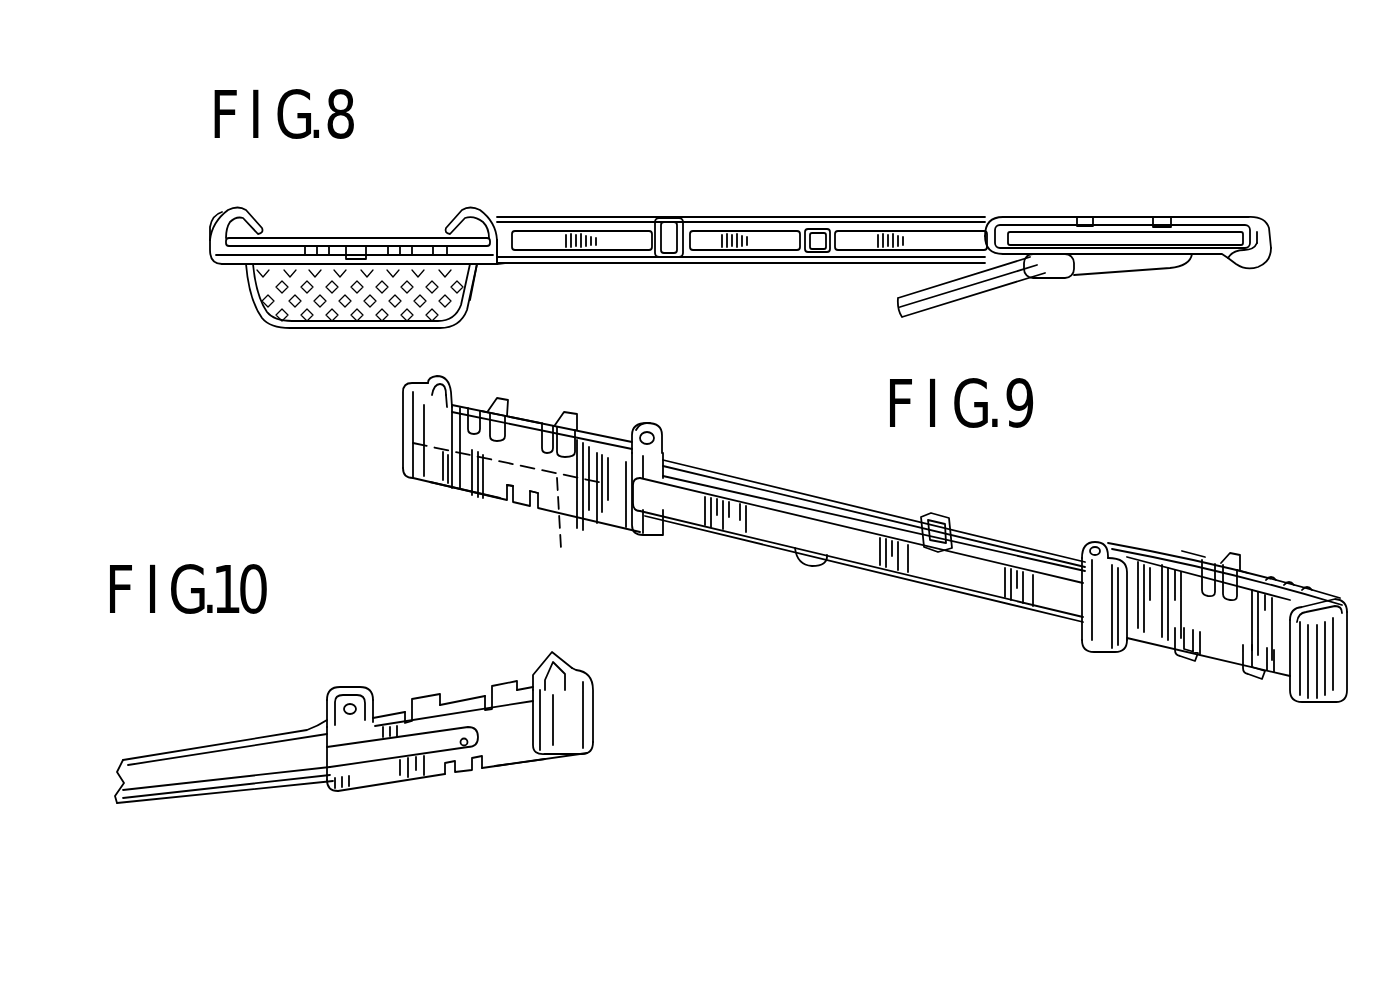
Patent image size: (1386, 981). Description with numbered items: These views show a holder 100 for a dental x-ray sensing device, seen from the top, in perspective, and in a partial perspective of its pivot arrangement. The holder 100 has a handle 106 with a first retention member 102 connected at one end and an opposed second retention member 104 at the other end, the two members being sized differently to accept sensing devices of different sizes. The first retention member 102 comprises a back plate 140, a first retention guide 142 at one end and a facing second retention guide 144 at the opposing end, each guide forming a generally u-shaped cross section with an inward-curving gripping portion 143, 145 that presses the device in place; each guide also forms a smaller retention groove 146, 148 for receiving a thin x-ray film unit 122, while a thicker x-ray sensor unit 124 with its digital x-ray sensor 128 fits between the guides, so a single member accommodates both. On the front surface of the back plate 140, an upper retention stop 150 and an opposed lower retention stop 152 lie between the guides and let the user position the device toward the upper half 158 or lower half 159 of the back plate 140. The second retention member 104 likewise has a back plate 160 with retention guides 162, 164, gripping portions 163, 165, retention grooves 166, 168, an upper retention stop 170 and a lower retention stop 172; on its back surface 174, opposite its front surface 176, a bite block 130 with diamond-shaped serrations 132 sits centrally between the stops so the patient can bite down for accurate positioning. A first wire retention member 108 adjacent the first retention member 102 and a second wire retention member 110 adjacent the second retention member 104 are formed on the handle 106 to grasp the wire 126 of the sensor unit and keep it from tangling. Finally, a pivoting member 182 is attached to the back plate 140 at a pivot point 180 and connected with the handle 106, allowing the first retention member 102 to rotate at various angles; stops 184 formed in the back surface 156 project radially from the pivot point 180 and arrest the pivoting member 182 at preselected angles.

In FIG. 8, the holder 100 is at (762, 186).
In FIG. 9, the holder 100 is at (795, 452).
In FIG. 10, the holder 100 is at (254, 814).
In FIG. 8, the first retention member 102 is at (1251, 188).
In FIG. 9, the first retention member 102 is at (415, 503).
In FIG. 10, the first retention member 102 is at (513, 784).
In FIG. 8, the second retention member 104 is at (468, 334).
In FIG. 9, the second retention member 104 is at (1207, 737).
In FIG. 8, the handle 106 is at (722, 240).
In FIG. 9, the handle 106 is at (883, 510).
In FIG. 10, the handle 106 is at (215, 758).
In FIG. 8, the first wire retention member 108 is at (814, 252).
In FIG. 9, the first wire retention member 108 is at (803, 565).
In FIG. 8, the second wire retention member 110 is at (665, 228).
In FIG. 9, the second wire retention member 110 is at (945, 520).
In FIG. 8, the x-ray film unit 122 is at (424, 246).
In FIG. 8, the x-ray sensor unit 124 is at (1210, 242).
In FIG. 8, the wire 126 is at (967, 295).
In FIG. 8, the digital x-ray sensor 128 is at (1157, 260).
In FIG. 8, the bite block 130 is at (382, 328).
In FIG. 9, the bite block 130 is at (1210, 560).
In FIG. 8, the serrations 132 is at (382, 312).
In FIG. 8, the back plate 140 is at (1027, 220).
In FIG. 9, the back plate 140 is at (480, 408).
In FIG. 10, the back plate 140 is at (360, 793).
In FIG. 8, the first retention guide 142 is at (1248, 273).
In FIG. 9, the first retention guide 142 is at (432, 378).
In FIG. 10, the first retention guide 142 is at (553, 652).
In FIG. 8, the gripping portion 143 is at (1228, 267).
In FIG. 9, the gripping portion 143 is at (453, 404).
In FIG. 8, the second retention guide 144 is at (1000, 257).
In FIG. 9, the second retention guide 144 is at (652, 428).
In FIG. 10, the second retention guide 144 is at (348, 686).
In FIG. 8, the gripping portion 145 is at (1023, 262).
In FIG. 9, the gripping portion 145 is at (646, 430).
In FIG. 8, the retention groove 146 is at (1268, 230).
In FIG. 9, the retention groove 146 is at (405, 390).
In FIG. 10, the retention groove 146 is at (583, 670).
In FIG. 8, the retention groove 148 is at (992, 238).
In FIG. 9, the retention groove 148 is at (664, 442).
In FIG. 10, the retention groove 148 is at (330, 703).
In FIG. 8, the upper retention stop 150 is at (1082, 224).
In FIG. 9, the upper retention stop 150 is at (500, 403).
In FIG. 10, the upper retention stop 150 is at (420, 697).
In FIG. 9, the lower retention stop 152 is at (530, 512).
In FIG. 10, the lower retention stop 152 is at (458, 777).
In FIG. 8, the back surface 156 is at (1218, 212).
In FIG. 9, the back surface 156 is at (447, 483).
In FIG. 10, the back surface 156 is at (517, 760).
In FIG. 9, the upper half 158 is at (605, 458).
In FIG. 9, the lower half 159 is at (601, 523).
In FIG. 8, the back plate 160 is at (282, 258).
In FIG. 9, the back plate 160 is at (1146, 548).
In FIG. 8, the retention guide 162 is at (497, 223).
In FIG. 9, the retention guide 162 is at (1082, 632).
In FIG. 8, the gripping portion 163 is at (452, 226).
In FIG. 9, the gripping portion 163 is at (1110, 640).
In FIG. 8, the retention guide 164 is at (213, 232).
In FIG. 9, the retention guide 164 is at (1345, 670).
In FIG. 8, the gripping portion 165 is at (258, 230).
In FIG. 9, the gripping portion 165 is at (1293, 680).
In FIG. 8, the retention groove 166 is at (503, 256).
In FIG. 9, the retention groove 166 is at (1097, 545).
In FIG. 8, the retention groove 168 is at (213, 258).
In FIG. 9, the retention groove 168 is at (1343, 603).
In FIG. 8, the upper retention stop 170 is at (357, 253).
In FIG. 9, the upper retention stop 170 is at (1242, 570).
In FIG. 8, the lower retention stop 172 is at (313, 247).
In FIG. 9, the lower retention stop 172 is at (1180, 658).
In FIG. 8, the back surface 174 is at (473, 290).
In FIG. 8, the front surface 176 is at (441, 248).
In FIG. 10, the pivot point 180 is at (573, 753).
In FIG. 10, the pivoting member 182 is at (387, 748).
In FIG. 10, the stops 184 is at (483, 738).